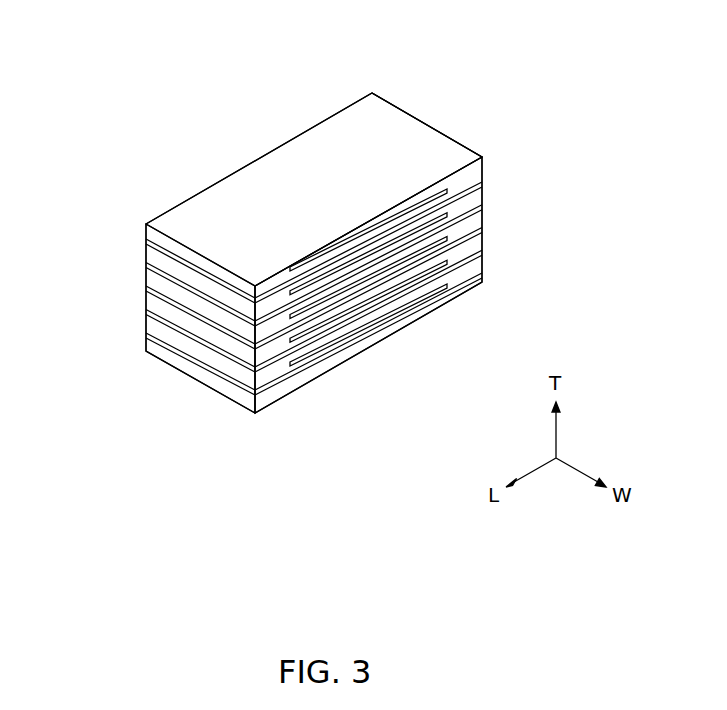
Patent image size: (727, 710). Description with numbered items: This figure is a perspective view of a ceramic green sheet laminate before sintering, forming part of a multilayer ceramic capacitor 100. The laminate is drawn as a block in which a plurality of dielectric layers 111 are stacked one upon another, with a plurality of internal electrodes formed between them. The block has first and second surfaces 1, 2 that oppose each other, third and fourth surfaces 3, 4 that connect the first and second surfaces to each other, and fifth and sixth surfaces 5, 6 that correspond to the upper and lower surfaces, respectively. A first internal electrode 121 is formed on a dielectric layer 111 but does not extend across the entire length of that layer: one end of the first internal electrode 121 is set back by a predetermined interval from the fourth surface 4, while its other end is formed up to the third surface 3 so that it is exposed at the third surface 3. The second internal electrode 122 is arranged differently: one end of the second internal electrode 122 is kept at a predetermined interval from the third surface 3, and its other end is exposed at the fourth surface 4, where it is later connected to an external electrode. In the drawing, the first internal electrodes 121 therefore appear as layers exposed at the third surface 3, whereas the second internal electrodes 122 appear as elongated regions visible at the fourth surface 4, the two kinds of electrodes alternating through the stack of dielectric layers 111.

The multilayer ceramic capacitor 100 is at (133, 29).
The first surface 1 is at (230, 195).
The second surface 2 is at (467, 286).
The third surface 3 is at (192, 358).
The fourth surface 4 is at (426, 141).
The fifth surface 5 is at (320, 145).
The sixth surface 6 is at (362, 330).
The dielectric layer 111 is at (160, 328).
The first internal electrode 121 is at (157, 274).
The second internal electrode 122 is at (455, 223).